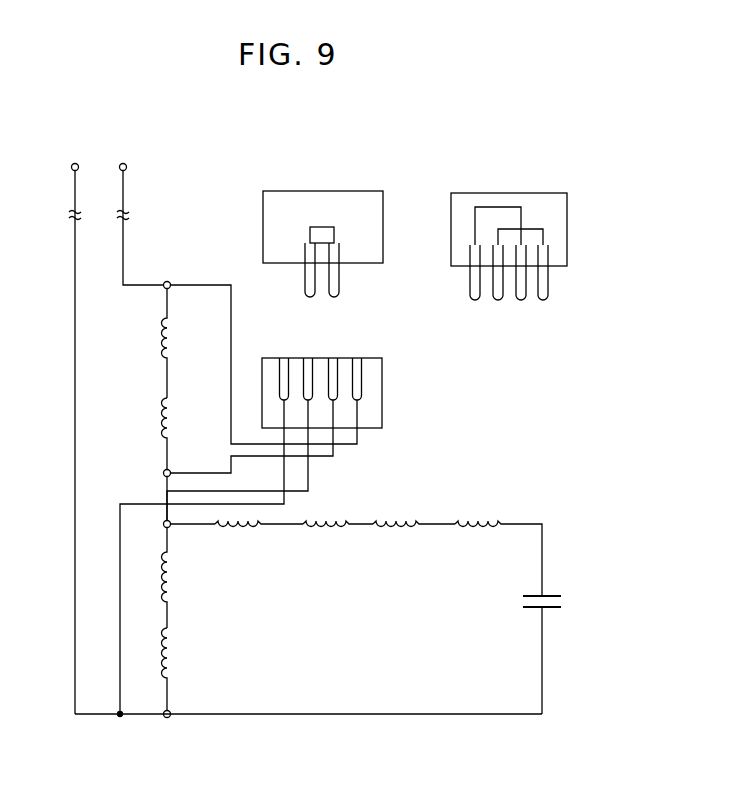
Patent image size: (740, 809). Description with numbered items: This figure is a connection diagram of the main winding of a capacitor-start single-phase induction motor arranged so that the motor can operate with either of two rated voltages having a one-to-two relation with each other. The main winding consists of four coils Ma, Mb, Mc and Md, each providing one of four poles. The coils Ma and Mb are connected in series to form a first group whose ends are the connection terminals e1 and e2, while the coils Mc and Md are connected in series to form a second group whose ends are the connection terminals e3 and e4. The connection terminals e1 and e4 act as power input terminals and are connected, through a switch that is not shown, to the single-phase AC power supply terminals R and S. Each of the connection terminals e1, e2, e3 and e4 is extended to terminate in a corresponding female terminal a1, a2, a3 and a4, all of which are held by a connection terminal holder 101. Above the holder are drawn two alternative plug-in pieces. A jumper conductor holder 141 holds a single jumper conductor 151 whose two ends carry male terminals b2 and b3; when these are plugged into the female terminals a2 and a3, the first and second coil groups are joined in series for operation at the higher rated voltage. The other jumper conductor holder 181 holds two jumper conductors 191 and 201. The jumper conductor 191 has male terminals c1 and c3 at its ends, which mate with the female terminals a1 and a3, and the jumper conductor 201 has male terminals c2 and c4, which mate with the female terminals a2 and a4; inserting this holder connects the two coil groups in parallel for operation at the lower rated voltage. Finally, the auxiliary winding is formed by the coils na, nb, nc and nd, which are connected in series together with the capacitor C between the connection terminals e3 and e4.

The single-phase AC power supply terminal R is at (75, 424).
The single-phase AC power supply terminal S is at (140, 210).
The connection terminal e1 is at (165, 282).
The connection terminal e2 is at (164, 473).
The connection terminal e3 is at (164, 524).
The connection terminal e4 is at (167, 718).
The main winding coil Ma is at (172, 333).
The main winding coil Mb is at (174, 437).
The main winding coil Mc is at (188, 568).
The main winding coil Md is at (175, 673).
The auxiliary winding coil na is at (229, 539).
The auxiliary winding coil nb is at (319, 539).
The auxiliary winding coil nc is at (389, 539).
The auxiliary winding coil nd is at (464, 539).
The capacitor C is at (562, 601).
The connection terminal holder 101 is at (383, 398).
The female terminal a1 is at (361, 367).
The female terminal a2 is at (337, 367).
The female terminal a3 is at (314, 367).
The female terminal a4 is at (290, 367).
The jumper conductor holder 141 is at (340, 191).
The jumper conductor 151 is at (318, 227).
The male terminal b2 is at (338, 286).
The male terminal b3 is at (313, 286).
The jumper conductor holder 181 is at (567, 230).
The jumper conductor 191 is at (530, 229).
The jumper conductor 201 is at (492, 207).
The male terminal c1 is at (546, 287).
The male terminal c2 is at (523, 287).
The male terminal c3 is at (501, 287).
The male terminal c4 is at (478, 287).